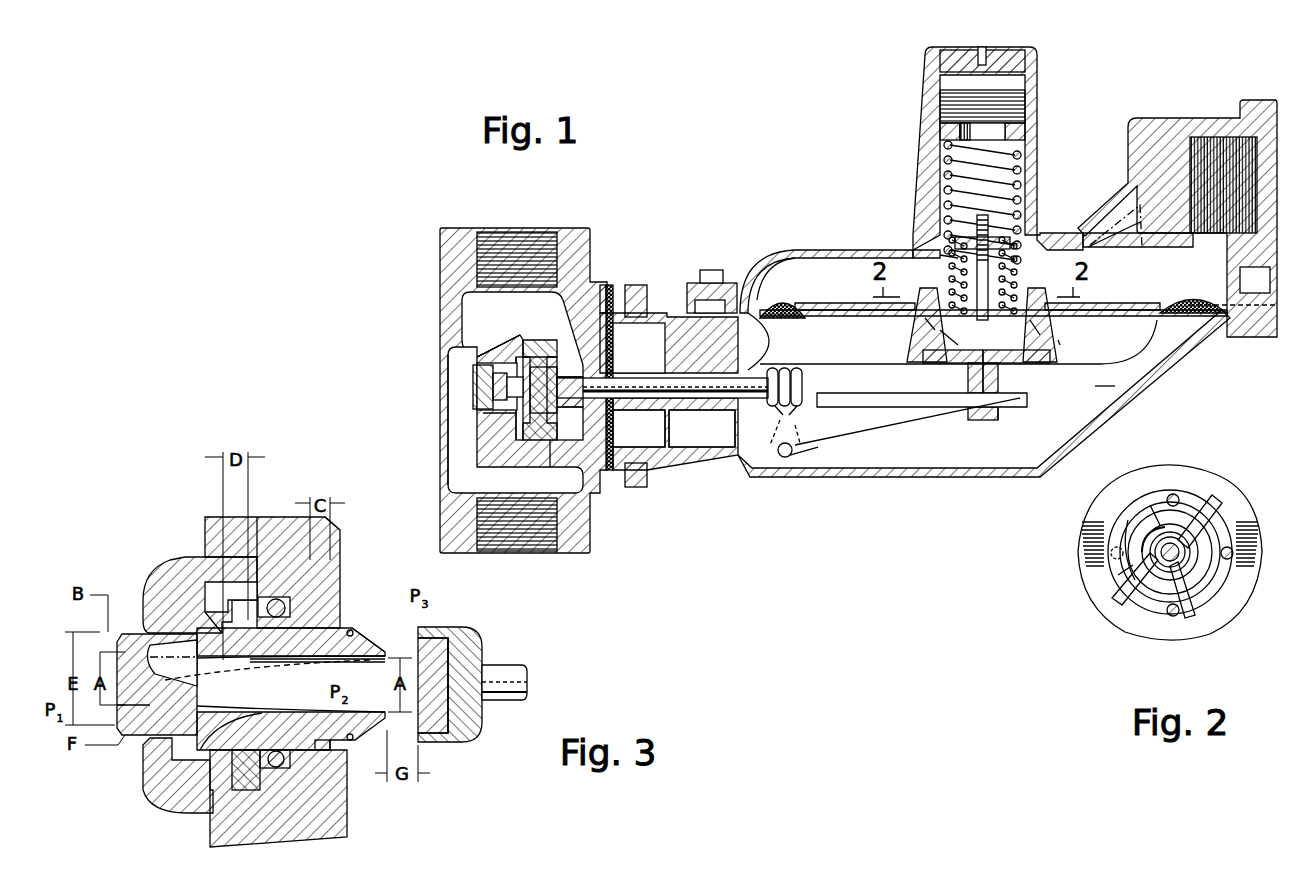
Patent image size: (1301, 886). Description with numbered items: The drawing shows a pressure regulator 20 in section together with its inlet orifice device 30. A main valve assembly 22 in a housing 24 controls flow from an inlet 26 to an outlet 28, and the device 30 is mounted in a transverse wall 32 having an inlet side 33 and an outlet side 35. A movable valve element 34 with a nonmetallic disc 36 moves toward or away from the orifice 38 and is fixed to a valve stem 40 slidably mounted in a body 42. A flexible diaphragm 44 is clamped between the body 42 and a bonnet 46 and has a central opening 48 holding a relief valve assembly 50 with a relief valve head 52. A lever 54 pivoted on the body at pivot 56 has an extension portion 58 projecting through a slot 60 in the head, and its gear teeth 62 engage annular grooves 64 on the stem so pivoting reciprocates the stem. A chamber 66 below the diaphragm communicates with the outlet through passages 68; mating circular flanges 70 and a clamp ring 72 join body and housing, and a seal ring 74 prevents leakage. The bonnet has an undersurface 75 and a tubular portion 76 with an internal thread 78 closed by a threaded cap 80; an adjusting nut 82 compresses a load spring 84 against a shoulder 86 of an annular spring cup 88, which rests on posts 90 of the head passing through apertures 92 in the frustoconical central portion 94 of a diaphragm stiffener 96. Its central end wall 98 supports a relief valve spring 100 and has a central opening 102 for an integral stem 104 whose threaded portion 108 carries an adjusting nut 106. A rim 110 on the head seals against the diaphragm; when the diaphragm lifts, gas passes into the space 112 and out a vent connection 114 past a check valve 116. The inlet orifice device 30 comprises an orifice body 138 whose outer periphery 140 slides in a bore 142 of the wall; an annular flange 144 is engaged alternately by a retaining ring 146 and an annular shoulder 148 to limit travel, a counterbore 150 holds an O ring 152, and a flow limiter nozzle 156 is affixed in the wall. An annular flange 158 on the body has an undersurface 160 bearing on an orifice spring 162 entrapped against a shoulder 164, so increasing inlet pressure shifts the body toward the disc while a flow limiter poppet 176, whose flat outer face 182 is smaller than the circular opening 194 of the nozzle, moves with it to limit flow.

In FIG. 1, the pressure regulator 20 is at (740, 182).
In FIG. 1, the main valve assembly 22 is at (588, 360).
In FIG. 3, the main valve assembly 22 is at (496, 642).
In FIG. 1, the housing 24 is at (440, 258).
In FIG. 1, the inlet 26 is at (547, 530).
In FIG. 1, the outlet 28 is at (485, 235).
In FIG. 1, the inlet orifice device 30 is at (458, 385).
In FIG. 3, the inlet orifice device 30 is at (118, 805).
In FIG. 1, the transverse wall 32 is at (500, 425).
In FIG. 3, the transverse wall 32 is at (258, 520).
In FIG. 1, the inlet side 33 is at (490, 455).
In FIG. 3, the inlet side 33 is at (207, 530).
In FIG. 1, the movable valve element 34 is at (557, 357).
In FIG. 3, the movable valve element 34 is at (470, 630).
In FIG. 1, the outlet side 35 is at (483, 340).
In FIG. 3, the outlet side 35 is at (342, 562).
In FIG. 1, the nonmetallic disc 36 is at (544, 414).
In FIG. 3, the nonmetallic disc 36 is at (440, 735).
In FIG. 3, the orifice 38 is at (360, 664).
In FIG. 1, the valve stem 40 is at (706, 394).
In FIG. 3, the valve stem 40 is at (503, 694).
In FIG. 1, the body 42 is at (836, 477).
In FIG. 1, the flexible diaphragm 44 is at (790, 300).
In FIG. 1, the bonnet 46 is at (800, 252).
In FIG. 1, the central opening 48 is at (925, 305).
In FIG. 1, the relief valve assembly 50 is at (1062, 340).
In FIG. 1, the relief valve head 52 is at (985, 418).
In FIG. 1, the lever 54 is at (860, 425).
In FIG. 1, the pivot 56 is at (792, 447).
In FIG. 1, the extension portion 58 is at (1030, 398).
In FIG. 1, the slot 60 is at (1003, 413).
In FIG. 1, the gear teeth 62 is at (795, 415).
In FIG. 1, the annular grooves 64 is at (800, 368).
In FIG. 1, the chamber 66 is at (1105, 375).
In FIG. 1, the passages 68 is at (670, 434).
In FIG. 1, the circular flanges 70 is at (611, 465).
In FIG. 1, the clamp ring 72 is at (650, 482).
In FIG. 1, the seal ring 74 is at (614, 427).
In FIG. 1, the undersurface 75 is at (858, 255).
In FIG. 1, the tubular portion 76 is at (1040, 107).
In FIG. 1, the internal thread 78 is at (1045, 168).
In FIG. 1, the threaded cap 80 is at (1015, 58).
In FIG. 1, the adjusting nut 82 is at (1040, 135).
In FIG. 1, the load spring 84 is at (940, 178).
In FIG. 2, the load spring 84 is at (1133, 548).
In FIG. 1, the shoulder 86 is at (940, 345).
In FIG. 1, the annular spring cup 88 is at (1030, 292).
In FIG. 2, the annular spring cup 88 is at (1152, 503).
In FIG. 1, the posts 90 is at (955, 300).
In FIG. 2, the posts 90 is at (1175, 498).
In FIG. 1, the aperture 92 is at (1038, 320).
In FIG. 2, the aperture 92 is at (1212, 500).
In FIG. 1, the frustoconical central portion 94 is at (1050, 350).
In FIG. 2, the frustoconical central portion 94 is at (1230, 502).
In FIG. 1, the diaphragm stiffener 96 is at (1137, 300).
In FIG. 2, the diaphragm stiffener 96 is at (1245, 512).
In FIG. 1, the central end wall 98 is at (955, 358).
In FIG. 2, the central end wall 98 is at (1150, 585).
In FIG. 1, the relief valve spring 100 is at (1042, 258).
In FIG. 2, the relief valve spring 100 is at (1182, 572).
In FIG. 1, the central opening 102 is at (970, 366).
In FIG. 1, the integral stem 104 is at (1000, 366).
In FIG. 2, the integral stem 104 is at (1185, 556).
In FIG. 1, the adjusting nut 106 is at (942, 252).
In FIG. 1, the threaded portion 108 is at (957, 228).
In FIG. 1, the rim 110 is at (925, 322).
In FIG. 1, the space 112 is at (826, 292).
In FIG. 1, the vent connection 114 is at (1225, 135).
In FIG. 1, the check valve 116 is at (1145, 248).
In FIG. 3, the orifice body 138 is at (352, 739).
In FIG. 3, the outer periphery 140 is at (300, 668).
In FIG. 3, the bore 142 is at (318, 740).
In FIG. 3, the annular flange 144 is at (345, 628).
In FIG. 3, the retaining ring 146 is at (353, 632).
In FIG. 3, the annular shoulder 148 is at (300, 725).
In FIG. 3, the counterbore 150 is at (300, 628).
In FIG. 3, the O ring 152 is at (275, 598).
In FIG. 3, the flow limiter nozzle 156 is at (185, 577).
In FIG. 3, the annular flange 158 is at (210, 768).
In FIG. 3, the undersurface 160 is at (245, 790).
In FIG. 3, the orifice spring 162 is at (262, 790).
In FIG. 3, the shoulder 164 is at (285, 770).
In FIG. 1, the flow limiter poppet 176 is at (470, 393).
In FIG. 3, the flow limiter poppet 176 is at (128, 634).
In FIG. 3, the outer face 182 is at (115, 716).
In FIG. 3, the circular opening 194 is at (155, 625).